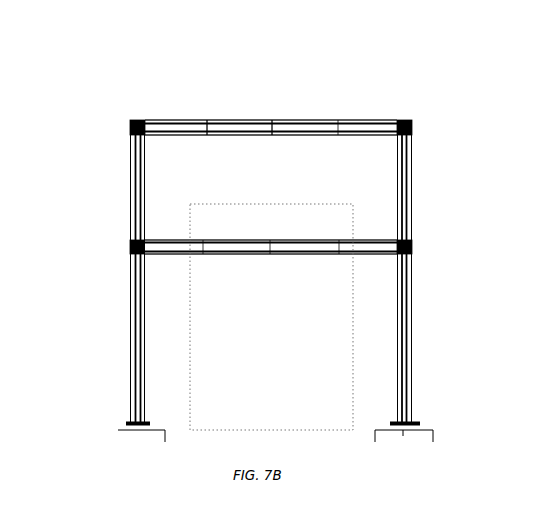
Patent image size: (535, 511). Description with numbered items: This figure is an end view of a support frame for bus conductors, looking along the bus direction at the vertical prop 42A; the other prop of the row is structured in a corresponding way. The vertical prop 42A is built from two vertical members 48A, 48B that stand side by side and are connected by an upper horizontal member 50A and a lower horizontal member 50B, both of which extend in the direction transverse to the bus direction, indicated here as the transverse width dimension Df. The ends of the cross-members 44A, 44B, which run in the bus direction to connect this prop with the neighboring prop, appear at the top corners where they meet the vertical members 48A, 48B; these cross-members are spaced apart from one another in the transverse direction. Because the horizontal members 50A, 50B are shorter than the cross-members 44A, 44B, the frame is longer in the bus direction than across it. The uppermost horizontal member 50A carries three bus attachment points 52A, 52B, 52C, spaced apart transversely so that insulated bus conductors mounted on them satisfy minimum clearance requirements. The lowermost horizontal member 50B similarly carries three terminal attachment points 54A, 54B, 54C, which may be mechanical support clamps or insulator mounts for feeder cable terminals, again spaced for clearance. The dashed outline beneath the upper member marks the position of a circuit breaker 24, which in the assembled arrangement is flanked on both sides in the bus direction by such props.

The frame width dimension Df is at (460, 63).
The vertical prop 42A is at (99, 134).
The cross-member 44A is at (405, 120).
The cross-member 44B is at (137, 120).
The vertical member 48A is at (130, 191).
The vertical member 48B is at (410, 193).
The horizontal member 50A is at (180, 136).
The horizontal member 50B is at (175, 258).
The bus attachment point 52A is at (338, 121).
The bus attachment point 52B is at (272, 121).
The bus attachment point 52C is at (207, 121).
The terminal attachment point 54A is at (339, 241).
The terminal attachment point 54B is at (270, 241).
The terminal attachment point 54C is at (203, 241).
The circuit breaker 24 is at (290, 198).